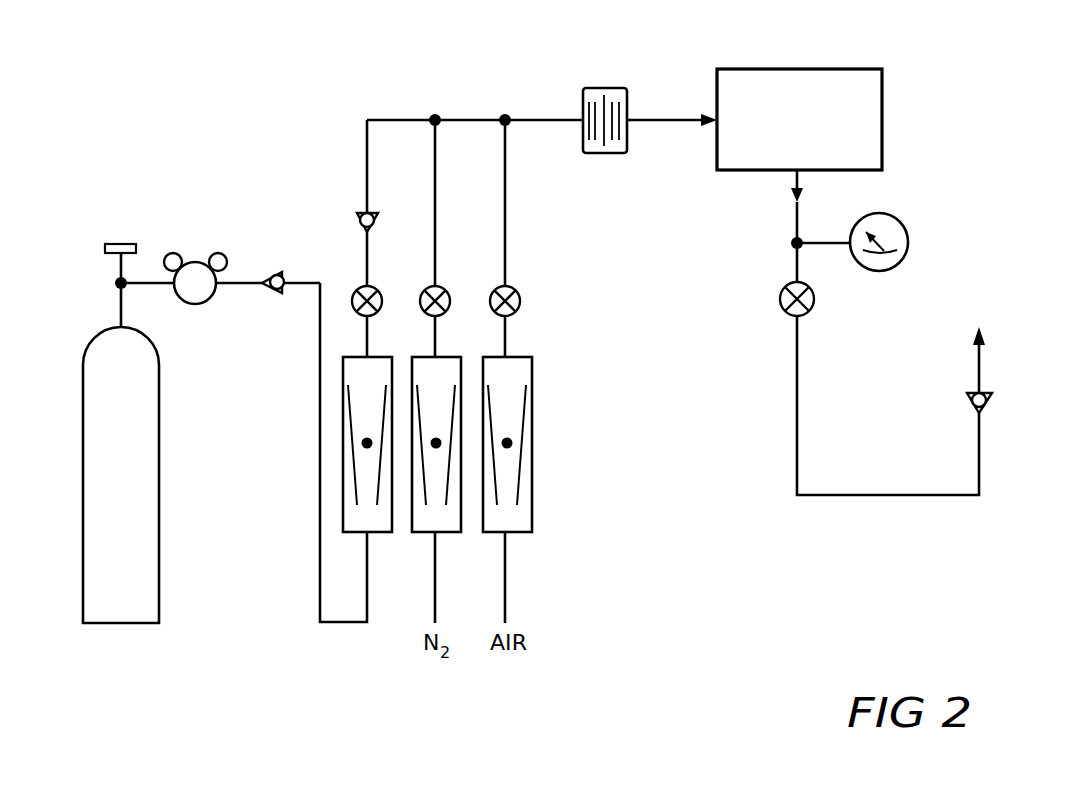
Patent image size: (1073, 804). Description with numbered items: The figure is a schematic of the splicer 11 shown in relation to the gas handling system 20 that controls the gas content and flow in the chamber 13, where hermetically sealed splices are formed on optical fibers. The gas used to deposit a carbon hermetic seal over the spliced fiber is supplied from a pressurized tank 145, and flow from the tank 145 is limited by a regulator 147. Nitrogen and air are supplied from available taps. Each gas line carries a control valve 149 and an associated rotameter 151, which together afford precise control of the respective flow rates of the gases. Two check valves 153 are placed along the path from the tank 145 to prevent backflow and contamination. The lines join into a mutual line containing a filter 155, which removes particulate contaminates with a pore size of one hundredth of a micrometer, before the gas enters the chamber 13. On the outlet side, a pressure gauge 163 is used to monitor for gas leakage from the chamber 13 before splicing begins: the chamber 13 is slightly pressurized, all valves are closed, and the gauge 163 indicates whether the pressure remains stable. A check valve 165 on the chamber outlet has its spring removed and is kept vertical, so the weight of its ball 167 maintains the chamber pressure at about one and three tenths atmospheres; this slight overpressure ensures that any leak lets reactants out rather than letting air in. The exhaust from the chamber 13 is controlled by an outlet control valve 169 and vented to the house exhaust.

The splicer 11 is at (975, 95).
The chamber 13 is at (811, 134).
The gas handling system 20 is at (720, 521).
The pressurized tank 145 is at (160, 488).
The regulator 147 is at (203, 297).
The control valves 149 is at (432, 287).
The rotameters 151 is at (426, 362).
The check valves 153 is at (360, 220).
The filter 155 is at (583, 100).
The pressure gauge 163 is at (907, 228).
The check valve 165 is at (969, 393).
The ball 167 is at (988, 398).
The outlet control valve 169 is at (780, 298).